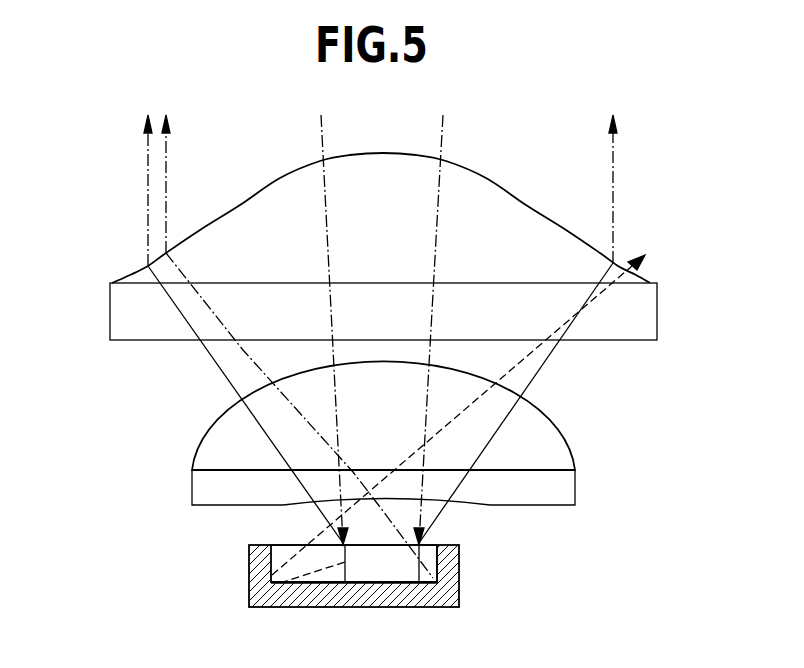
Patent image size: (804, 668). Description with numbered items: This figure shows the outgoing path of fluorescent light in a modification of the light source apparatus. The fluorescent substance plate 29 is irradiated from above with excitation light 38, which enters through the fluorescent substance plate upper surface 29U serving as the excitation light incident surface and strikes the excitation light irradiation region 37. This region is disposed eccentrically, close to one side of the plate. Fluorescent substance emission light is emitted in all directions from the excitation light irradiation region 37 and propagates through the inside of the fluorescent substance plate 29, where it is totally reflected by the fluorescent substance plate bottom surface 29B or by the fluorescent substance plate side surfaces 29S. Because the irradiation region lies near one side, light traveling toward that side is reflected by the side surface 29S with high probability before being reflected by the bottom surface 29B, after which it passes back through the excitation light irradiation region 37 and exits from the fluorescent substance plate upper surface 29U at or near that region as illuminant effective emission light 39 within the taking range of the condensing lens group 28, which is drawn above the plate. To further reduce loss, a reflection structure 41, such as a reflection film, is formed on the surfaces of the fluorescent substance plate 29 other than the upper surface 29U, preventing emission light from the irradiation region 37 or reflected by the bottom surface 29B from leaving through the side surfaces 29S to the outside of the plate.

The condensing lens group 28 is at (98, 143).
The fluorescent substance plate 29 is at (283, 552).
The fluorescent substance plate upper surface 29U is at (432, 545).
The fluorescent substance plate side surface 29S is at (438, 564).
The fluorescent substance plate bottom surface 29B is at (440, 598).
The excitation light irradiation region 37 is at (387, 575).
The excitation light 38 is at (443, 140).
The illuminant effective emission light 39 is at (167, 152).
The reflection structure 41 is at (250, 597).